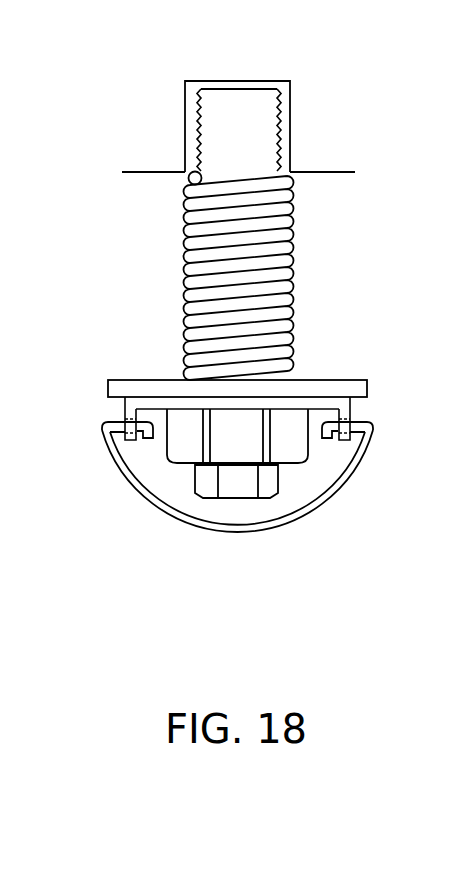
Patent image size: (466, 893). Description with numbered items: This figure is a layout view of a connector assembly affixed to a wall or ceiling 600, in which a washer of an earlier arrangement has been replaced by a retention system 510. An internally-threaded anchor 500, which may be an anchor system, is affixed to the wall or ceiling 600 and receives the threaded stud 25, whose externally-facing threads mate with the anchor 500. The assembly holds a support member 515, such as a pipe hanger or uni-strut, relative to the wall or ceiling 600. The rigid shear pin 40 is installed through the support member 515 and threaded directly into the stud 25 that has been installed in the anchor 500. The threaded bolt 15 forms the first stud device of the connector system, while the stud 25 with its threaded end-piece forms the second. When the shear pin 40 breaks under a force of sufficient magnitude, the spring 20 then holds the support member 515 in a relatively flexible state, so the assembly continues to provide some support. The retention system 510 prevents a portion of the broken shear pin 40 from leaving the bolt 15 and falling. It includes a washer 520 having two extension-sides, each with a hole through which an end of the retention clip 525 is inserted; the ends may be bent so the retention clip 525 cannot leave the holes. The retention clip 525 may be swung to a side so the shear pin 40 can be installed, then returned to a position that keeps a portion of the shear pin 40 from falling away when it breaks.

The anchor 500 is at (285, 108).
The threaded stud 25 is at (283, 138).
The spring 20 is at (296, 258).
The wall or ceiling 600 is at (165, 177).
The support member 515 is at (182, 378).
The washer 520 is at (356, 408).
The threaded bolt 15 is at (310, 467).
The shear pin 40 is at (193, 483).
The retention system 510 is at (235, 530).
The retention clip 525 is at (288, 521).